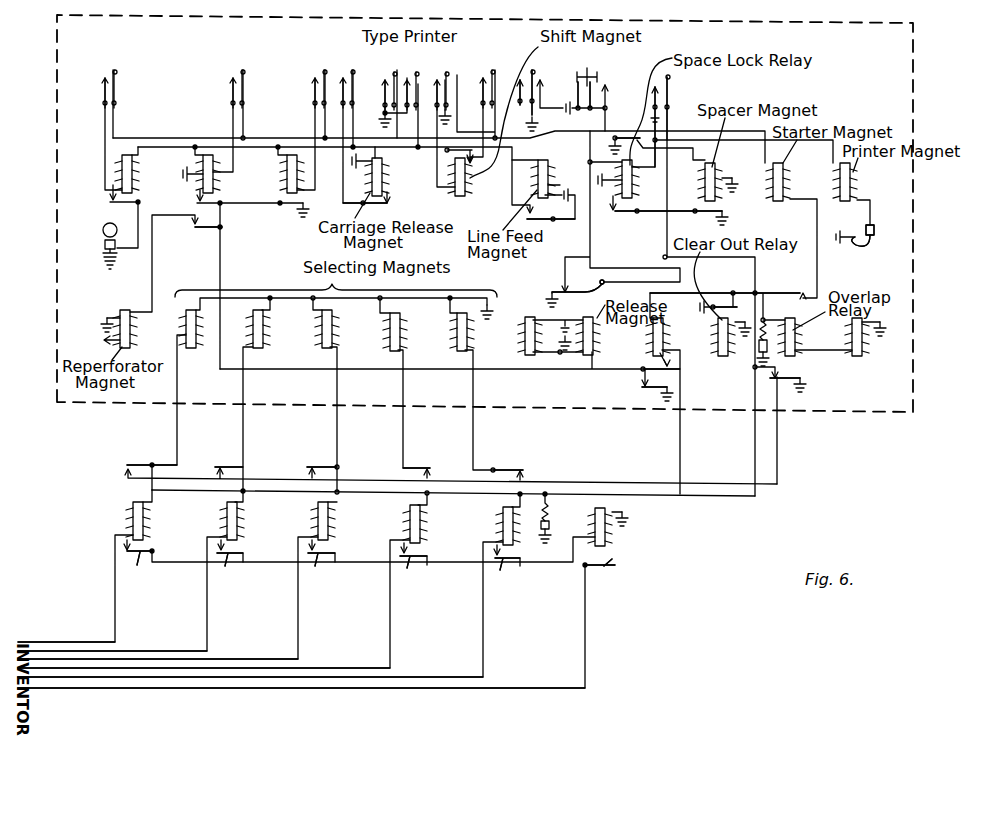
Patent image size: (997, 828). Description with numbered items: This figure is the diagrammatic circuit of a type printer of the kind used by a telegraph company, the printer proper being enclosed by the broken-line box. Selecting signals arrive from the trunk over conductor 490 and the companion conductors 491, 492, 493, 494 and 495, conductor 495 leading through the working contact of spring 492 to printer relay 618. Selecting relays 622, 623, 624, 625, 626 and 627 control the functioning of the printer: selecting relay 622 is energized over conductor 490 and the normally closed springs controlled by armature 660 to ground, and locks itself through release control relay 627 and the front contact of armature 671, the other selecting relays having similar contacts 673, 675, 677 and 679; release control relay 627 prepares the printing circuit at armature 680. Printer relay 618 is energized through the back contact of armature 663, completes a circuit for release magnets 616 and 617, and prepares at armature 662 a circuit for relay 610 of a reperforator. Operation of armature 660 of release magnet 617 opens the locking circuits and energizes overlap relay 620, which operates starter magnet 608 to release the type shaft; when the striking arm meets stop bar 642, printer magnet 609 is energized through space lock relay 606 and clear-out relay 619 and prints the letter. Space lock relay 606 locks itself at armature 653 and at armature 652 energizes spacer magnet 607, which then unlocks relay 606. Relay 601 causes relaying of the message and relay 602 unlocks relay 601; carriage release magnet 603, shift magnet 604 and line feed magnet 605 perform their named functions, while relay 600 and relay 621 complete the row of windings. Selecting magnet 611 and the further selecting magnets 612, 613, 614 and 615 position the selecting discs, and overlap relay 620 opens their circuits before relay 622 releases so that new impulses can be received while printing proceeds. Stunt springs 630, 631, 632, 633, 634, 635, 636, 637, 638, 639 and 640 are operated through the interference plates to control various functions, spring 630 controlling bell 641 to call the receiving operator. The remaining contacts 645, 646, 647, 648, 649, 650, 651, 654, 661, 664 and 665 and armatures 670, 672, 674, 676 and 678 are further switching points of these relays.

The conductor 490 is at (35, 637).
The selecting conductor 491 is at (70, 651).
The spring 492 is at (118, 659).
The selecting conductor 493 is at (72, 670).
The selecting conductor 494 is at (125, 678).
The conductor 495 is at (172, 688).
The relay magnet 600 is at (144, 174).
The relay 601 is at (214, 176).
The relay 602 is at (286, 166).
The carriage release magnet 603 is at (386, 178).
The shift magnet 604 is at (463, 168).
The line feed magnet 605 is at (545, 166).
The space lock relay 606 is at (637, 193).
The spacer magnet 607 is at (713, 180).
The starter magnet 608 is at (783, 175).
The printer magnet 609 is at (850, 175).
The relay 610 is at (132, 322).
The selecting magnet 611 is at (183, 338).
The selecting magnet 612 is at (261, 337).
The selecting magnet 613 is at (331, 337).
The selecting magnet 614 is at (399, 342).
The selecting magnet 615 is at (466, 344).
The release magnet 616 is at (580, 303).
The release magnet 617 is at (593, 346).
The printer relay 618 is at (663, 338).
The clear out relay 619 is at (723, 353).
The overlap relay 620 is at (796, 336).
The relay magnet 621 is at (860, 351).
The selecting relay 622 is at (144, 520).
The selecting relay 623 is at (237, 520).
The selecting relay 624 is at (329, 521).
The selecting relay 625 is at (420, 522).
The selecting relay 626 is at (511, 538).
The release control relay 627 is at (605, 536).
The spring 630 is at (118, 80).
The spring 631 is at (245, 80).
The spring 632 is at (318, 78).
The spring 633 is at (352, 78).
The spring 634 is at (395, 78).
The spring 635 is at (425, 80).
The spring 636 is at (470, 72).
The spring 637 is at (510, 70).
The spring 638 is at (540, 80).
The spring 639 is at (610, 70).
The spring 640 is at (672, 90).
The bell 641 is at (105, 245).
The stop bar 642 is at (862, 240).
The contact 645 is at (120, 206).
The contact 646 is at (203, 207).
The contact 647 is at (198, 229).
The ground 648 is at (297, 208).
The contact 649 is at (395, 204).
The contact 650 is at (445, 152).
The contact 651 is at (536, 200).
The armature 652 is at (628, 127).
The armature 653 is at (626, 212).
The ground 654 is at (705, 212).
The armature 660 is at (593, 286).
The contact 661 is at (665, 371).
The armature 662 is at (649, 389).
The armature 663 is at (716, 300).
The contact 664 is at (792, 293).
The contact 665 is at (785, 378).
The contact 670 is at (148, 459).
The armature 671 is at (139, 558).
The contact 672 is at (216, 466).
The contact 673 is at (229, 560).
The contact 674 is at (312, 466).
The contact 675 is at (318, 560).
The contact 676 is at (421, 467).
The contact 677 is at (405, 567).
The contact 678 is at (515, 469).
The contact 679 is at (497, 568).
The armature 680 is at (600, 568).